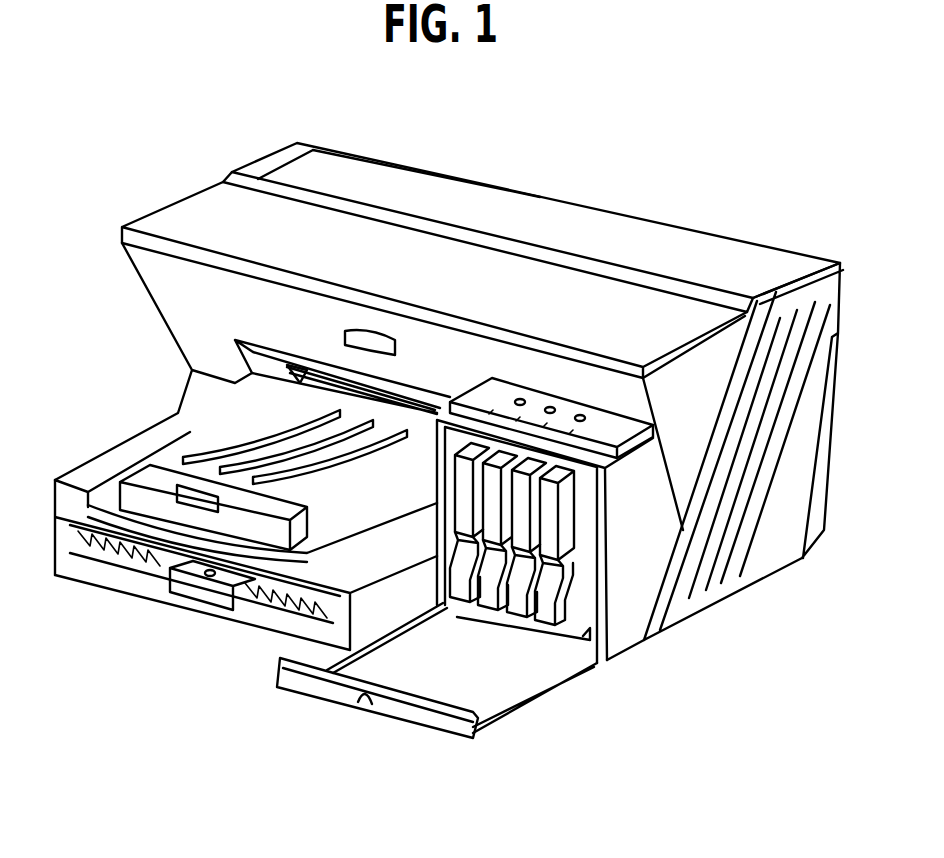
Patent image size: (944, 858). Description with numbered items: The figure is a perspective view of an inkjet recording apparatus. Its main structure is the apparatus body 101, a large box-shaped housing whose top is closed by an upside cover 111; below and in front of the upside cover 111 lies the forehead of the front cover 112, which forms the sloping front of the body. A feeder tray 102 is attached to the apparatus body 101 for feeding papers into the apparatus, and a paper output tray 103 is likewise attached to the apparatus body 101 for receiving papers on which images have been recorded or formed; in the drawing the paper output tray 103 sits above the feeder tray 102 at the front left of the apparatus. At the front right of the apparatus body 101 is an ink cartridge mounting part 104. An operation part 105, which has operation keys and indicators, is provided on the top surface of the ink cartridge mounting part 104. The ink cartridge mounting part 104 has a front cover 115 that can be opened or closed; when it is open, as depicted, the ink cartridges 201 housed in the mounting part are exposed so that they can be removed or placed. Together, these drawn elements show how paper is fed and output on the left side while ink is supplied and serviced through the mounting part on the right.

The apparatus body 101 is at (550, 158).
The upside cover 111 is at (400, 160).
The forehead of the front cover 112 is at (162, 303).
The operation part 105 is at (600, 433).
The ink cartridge mounting part 104 is at (625, 630).
The ink cartridges 201 is at (517, 620).
The front cover 115 is at (284, 674).
The feeder tray 102 is at (242, 623).
The paper output tray 103 is at (128, 486).